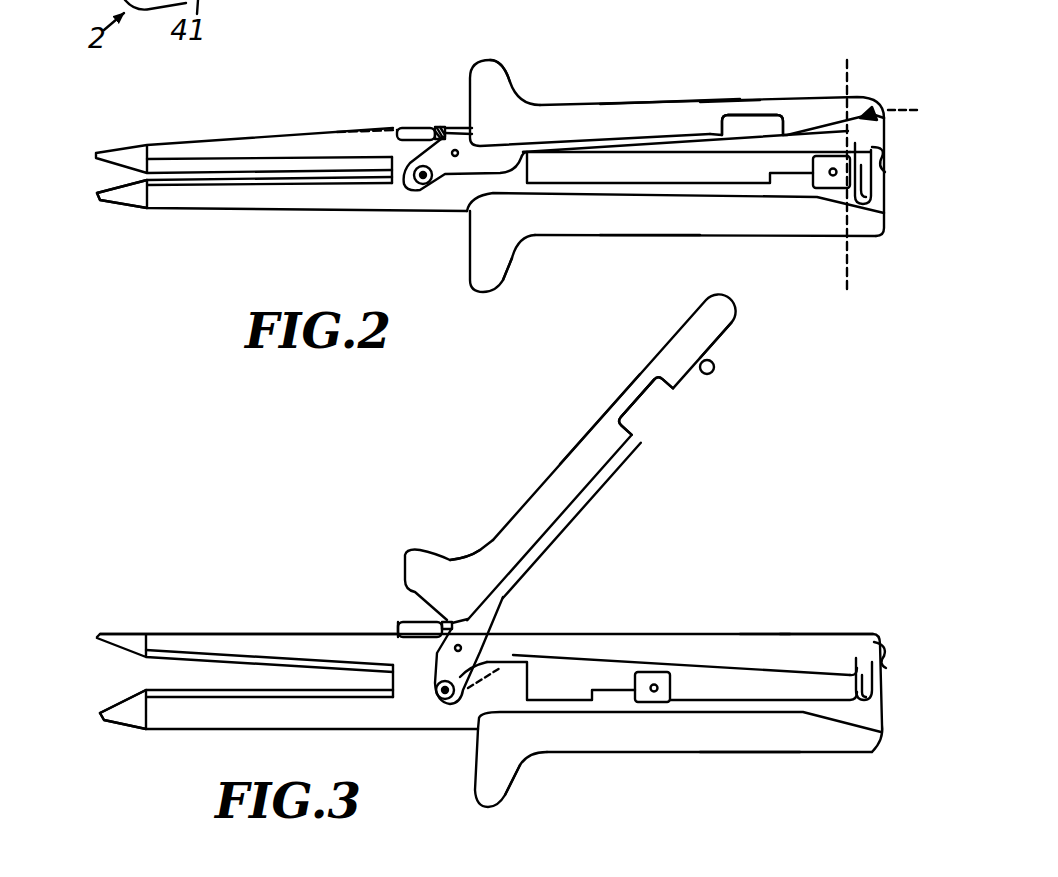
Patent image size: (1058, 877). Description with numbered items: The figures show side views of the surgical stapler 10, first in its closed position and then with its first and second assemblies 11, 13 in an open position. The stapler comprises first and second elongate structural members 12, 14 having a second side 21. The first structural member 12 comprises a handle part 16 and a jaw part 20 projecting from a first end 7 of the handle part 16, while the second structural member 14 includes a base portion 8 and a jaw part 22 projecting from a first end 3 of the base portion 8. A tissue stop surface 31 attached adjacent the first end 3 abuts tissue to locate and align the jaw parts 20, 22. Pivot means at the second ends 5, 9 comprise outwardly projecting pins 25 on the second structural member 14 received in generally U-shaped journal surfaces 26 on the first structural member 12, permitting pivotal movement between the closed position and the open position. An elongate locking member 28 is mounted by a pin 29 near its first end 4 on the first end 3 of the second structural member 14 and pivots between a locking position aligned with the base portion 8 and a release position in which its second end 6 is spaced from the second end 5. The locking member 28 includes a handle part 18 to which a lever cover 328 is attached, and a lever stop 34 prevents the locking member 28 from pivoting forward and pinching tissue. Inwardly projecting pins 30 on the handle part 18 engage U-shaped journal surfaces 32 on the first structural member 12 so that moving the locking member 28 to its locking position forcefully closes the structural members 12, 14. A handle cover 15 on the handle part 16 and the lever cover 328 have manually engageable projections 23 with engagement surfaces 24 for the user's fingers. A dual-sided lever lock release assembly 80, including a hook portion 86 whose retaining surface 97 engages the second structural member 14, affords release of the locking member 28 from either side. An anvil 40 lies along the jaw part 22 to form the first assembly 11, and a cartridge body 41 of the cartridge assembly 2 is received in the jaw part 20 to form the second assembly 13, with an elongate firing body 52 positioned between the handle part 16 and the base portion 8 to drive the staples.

In FIG. 2, the cartridge assembly 2 is at (107, 207).
In FIG. 3, the cartridge assembly 2 is at (99, 717).
In FIG. 3, the first end of the base portion 3 is at (413, 622).
In FIG. 2, the first end of the locking member 4 is at (817, 65).
In FIG. 3, the first end of the locking member 4 is at (462, 698).
In FIG. 2, the second end of the base portion 5 is at (877, 116).
In FIG. 3, the second end of the base portion 5 is at (866, 650).
In FIG. 2, the second end of the locking member 6 is at (864, 110).
In FIG. 3, the second end of the locking member 6 is at (688, 384).
In FIG. 2, the first end of the handle part 7 is at (464, 198).
In FIG. 3, the first end of the handle part 7 is at (440, 705).
In FIG. 2, the base portion 8 is at (341, 135).
In FIG. 3, the base portion 8 is at (761, 634).
In FIG. 2, the second end of the handle part 9 is at (878, 203).
In FIG. 3, the second end of the handle part 9 is at (885, 707).
In FIG. 2, the surgical stapler 10 is at (276, 124).
In FIG. 2, the first assembly 11 is at (723, 94).
In FIG. 3, the first assembly 11 is at (723, 529).
In FIG. 2, the first elongate structural member 12 is at (864, 200).
In FIG. 3, the first elongate structural member 12 is at (887, 722).
In FIG. 2, the second assembly 13 is at (742, 240).
In FIG. 3, the second assembly 13 is at (642, 762).
In FIG. 2, the second elongate structural member 14 is at (869, 118).
In FIG. 3, the second elongate structural member 14 is at (808, 633).
In FIG. 2, the handle cover 15 is at (712, 230).
In FIG. 3, the handle cover 15 is at (758, 742).
In FIG. 2, the handle part 16 is at (668, 194).
In FIG. 3, the handle part 16 is at (792, 709).
In FIG. 2, the handle part of the locking member 18 is at (683, 138).
In FIG. 3, the handle part of the locking member 18 is at (623, 467).
In FIG. 2, the jaw part 20 is at (240, 200).
In FIG. 3, the jaw part 20 is at (243, 723).
In FIG. 3, the second side 21 is at (585, 500).
In FIG. 2, the jaw part 22 is at (212, 150).
In FIG. 3, the jaw part 22 is at (247, 640).
In FIG. 2, the manually engageable projections 23 is at (506, 94).
In FIG. 3, the manually engageable projections 23 is at (447, 563).
In FIG. 2, the engagement surfaces 24 is at (468, 77).
In FIG. 3, the engagement surfaces 24 is at (406, 558).
In FIG. 2, the pins 25 is at (883, 172).
In FIG. 3, the pins 25 is at (885, 673).
In FIG. 2, the U-shaped journal surfaces 26 is at (882, 152).
In FIG. 3, the U-shaped journal surfaces 26 is at (876, 655).
In FIG. 2, the elongate locking member 28 is at (597, 153).
In FIG. 3, the elongate locking member 28 is at (660, 434).
In FIG. 2, the pin 29 is at (456, 149).
In FIG. 3, the pin 29 is at (463, 645).
In FIG. 2, the inwardly projecting pins 30 is at (419, 184).
In FIG. 3, the inwardly projecting pins 30 is at (441, 700).
In FIG. 2, the tissue stop surface 31 is at (396, 127).
In FIG. 3, the tissue stop surface 31 is at (397, 624).
In FIG. 3, the U-shaped journal surfaces 32 is at (412, 692).
In FIG. 2, the lever stop 34 is at (437, 127).
In FIG. 3, the lever stop 34 is at (450, 618).
In FIG. 2, the anvil 40 is at (160, 158).
In FIG. 3, the anvil 40 is at (173, 650).
In FIG. 2, the cartridge body 41 is at (143, 183).
In FIG. 3, the cartridge body 41 is at (152, 692).
In FIG. 2, the elongate firing body 52 is at (846, 182).
In FIG. 3, the elongate firing body 52 is at (675, 687).
In FIG. 2, the dual-sided lever lock release assembly 80 is at (781, 112).
In FIG. 3, the dual-sided lever lock release assembly 80 is at (650, 380).
In FIG. 3, the hook portion 86 is at (716, 364).
In FIG. 2, the notch edge 97 is at (757, 114).
In FIG. 3, the notch edge 97 is at (658, 404).
In FIG. 2, the lever cover 328 is at (653, 101).
In FIG. 3, the lever cover 328 is at (601, 417).